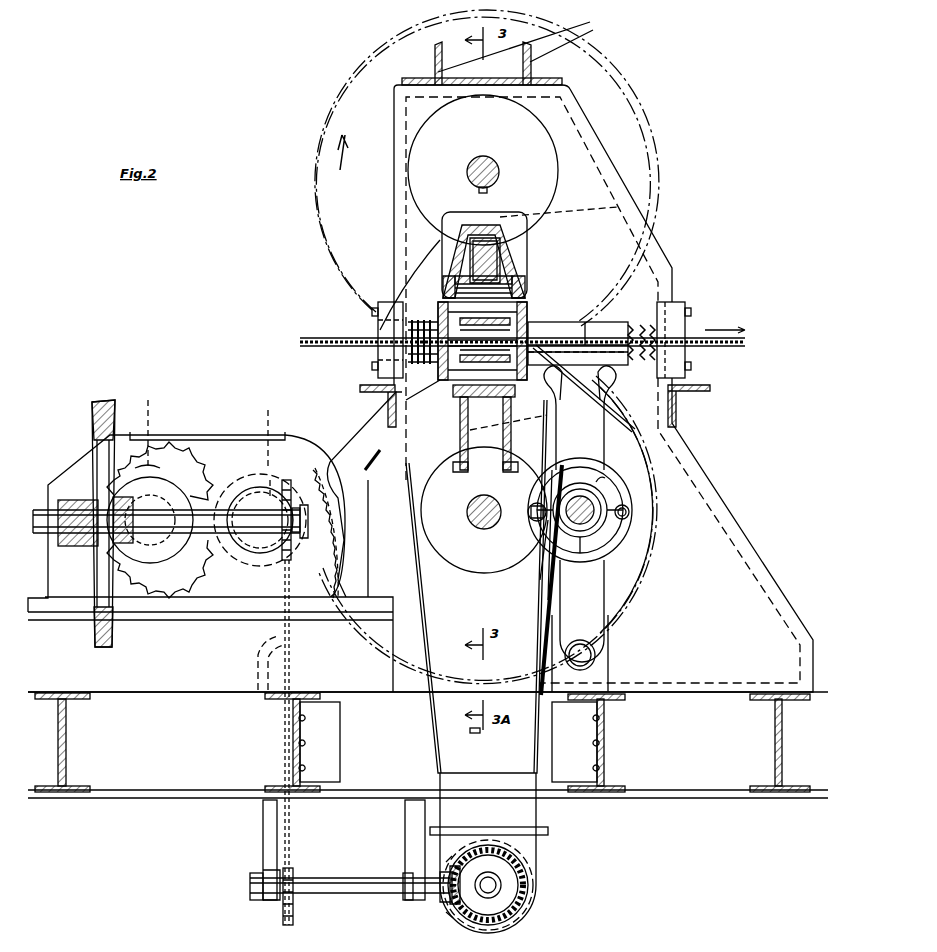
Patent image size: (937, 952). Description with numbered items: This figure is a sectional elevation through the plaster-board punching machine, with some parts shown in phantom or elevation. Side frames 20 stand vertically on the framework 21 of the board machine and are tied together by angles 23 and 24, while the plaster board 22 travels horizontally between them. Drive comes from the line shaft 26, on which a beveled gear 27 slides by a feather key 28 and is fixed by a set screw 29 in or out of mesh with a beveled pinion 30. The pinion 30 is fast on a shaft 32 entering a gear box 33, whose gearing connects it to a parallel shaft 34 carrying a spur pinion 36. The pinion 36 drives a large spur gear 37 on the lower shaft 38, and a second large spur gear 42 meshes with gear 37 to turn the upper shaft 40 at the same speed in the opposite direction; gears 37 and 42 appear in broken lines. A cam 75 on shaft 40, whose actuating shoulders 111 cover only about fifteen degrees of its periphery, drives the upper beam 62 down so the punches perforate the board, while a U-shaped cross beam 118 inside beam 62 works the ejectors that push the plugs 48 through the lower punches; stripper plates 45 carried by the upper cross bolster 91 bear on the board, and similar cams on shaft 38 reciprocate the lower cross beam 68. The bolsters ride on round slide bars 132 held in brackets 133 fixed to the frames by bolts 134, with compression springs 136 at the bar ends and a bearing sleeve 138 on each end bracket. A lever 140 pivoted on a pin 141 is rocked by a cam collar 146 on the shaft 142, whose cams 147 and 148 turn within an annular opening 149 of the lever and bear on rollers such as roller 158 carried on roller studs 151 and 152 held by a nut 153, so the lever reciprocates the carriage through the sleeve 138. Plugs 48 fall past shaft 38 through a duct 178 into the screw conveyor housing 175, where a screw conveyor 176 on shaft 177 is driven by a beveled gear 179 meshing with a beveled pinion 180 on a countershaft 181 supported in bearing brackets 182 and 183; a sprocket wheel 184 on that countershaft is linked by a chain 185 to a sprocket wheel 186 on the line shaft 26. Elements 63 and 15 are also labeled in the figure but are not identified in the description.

The side frames 20 is at (700, 525).
The framework 21 is at (777, 755).
The plaster board 22 is at (740, 350).
The angles 23 is at (380, 398).
The angles 24 is at (525, 46).
The line shaft 26 is at (185, 520).
The beveled gear 27 is at (103, 440).
The feather key 28 is at (100, 520).
The set screw 29 is at (85, 500).
The beveled pinion 30 is at (170, 475).
The shaft 32 is at (151, 426).
The gear box 33 is at (232, 470).
The parallel shaft 34 is at (284, 457).
The spur pinion 36 is at (293, 488).
The large spur gear 37 is at (356, 390).
The shaft 38 is at (483, 530).
The shaft 40 is at (483, 172).
The large spur gear 42 is at (627, 92).
The annular stripper plates 45 is at (527, 325).
The plugs 48 is at (480, 733).
The beam 62 is at (492, 235).
The box 63 is at (452, 215).
The cross beam 68 is at (462, 430).
The cam 75 is at (523, 140).
The upper cross bolster 91 is at (530, 308).
The actuating shoulders 111 is at (620, 207).
The U-shaped cross beam 118 is at (498, 262).
The round slide bar 132 is at (527, 328).
The brackets 133 is at (378, 318).
The bolts 134 is at (372, 312).
The compression springs 136 is at (420, 330).
The bearing sleeve 138 is at (620, 322).
The lever 140 is at (583, 598).
The pin 141 is at (595, 655).
The shaft 142 is at (590, 525).
The cam collar 146 is at (590, 500).
The cam 147 is at (550, 600).
The cam 148 is at (598, 540).
The annular opening 149 is at (600, 482).
The roller stud 151 is at (545, 540).
The roller stud 152 is at (630, 508).
The nut 153 is at (552, 585).
The roller 158 is at (540, 502).
The screw conveyor housing 175 is at (525, 848).
The screw conveyor 176 is at (540, 867).
The shaft 177 is at (500, 888).
The duct 178 is at (540, 806).
The beveled gear 179 is at (510, 905).
The beveled pinion 180 is at (460, 908).
The countershaft 181 is at (378, 893).
The bearing bracket 182 is at (418, 898).
The bearing bracket 183 is at (268, 893).
The sprocket wheel 184 is at (294, 875).
The chain 185 is at (283, 748).
The sprocket wheel 186 is at (295, 485).
The lower wheel 15 is at (452, 572).